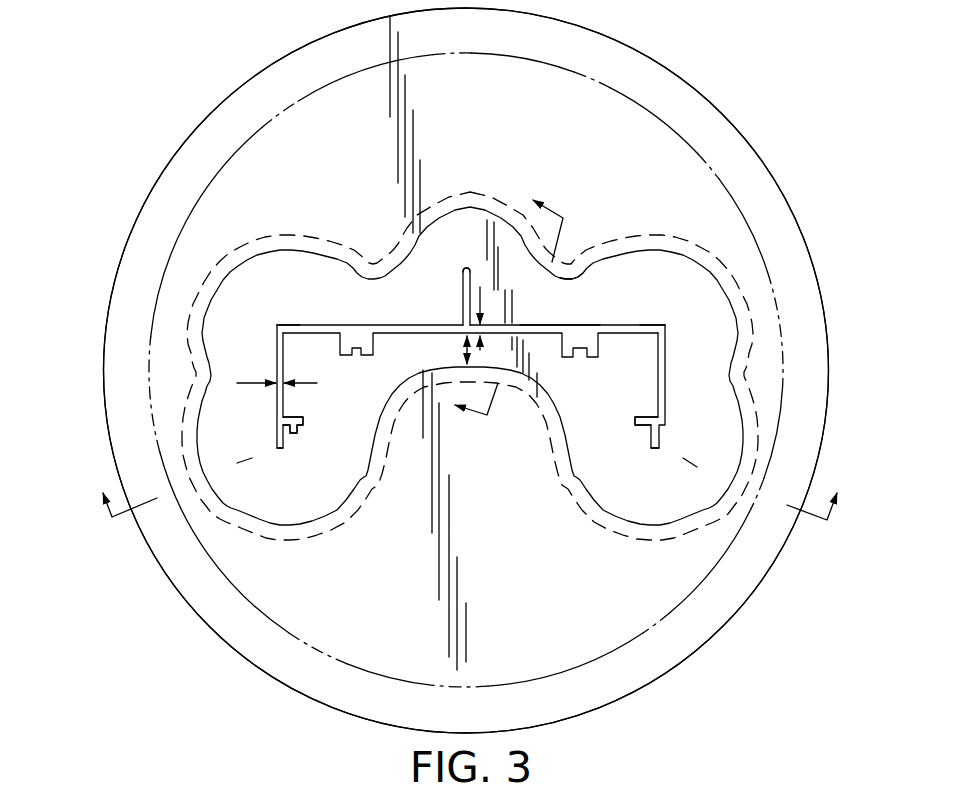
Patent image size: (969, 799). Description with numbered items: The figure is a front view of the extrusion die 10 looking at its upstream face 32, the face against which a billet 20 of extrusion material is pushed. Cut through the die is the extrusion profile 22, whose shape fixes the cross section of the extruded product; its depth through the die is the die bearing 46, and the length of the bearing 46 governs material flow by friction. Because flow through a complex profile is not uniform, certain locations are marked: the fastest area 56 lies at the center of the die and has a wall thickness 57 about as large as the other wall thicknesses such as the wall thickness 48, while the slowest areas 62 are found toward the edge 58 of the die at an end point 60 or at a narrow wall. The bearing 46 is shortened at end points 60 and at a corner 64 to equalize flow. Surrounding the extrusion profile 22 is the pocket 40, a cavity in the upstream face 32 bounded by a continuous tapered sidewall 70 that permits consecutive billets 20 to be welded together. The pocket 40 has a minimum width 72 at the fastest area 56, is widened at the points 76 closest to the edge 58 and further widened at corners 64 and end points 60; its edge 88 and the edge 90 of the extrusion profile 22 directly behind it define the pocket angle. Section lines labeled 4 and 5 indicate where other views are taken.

The extrusion die 10 is at (733, 100).
The billet 20 is at (340, 662).
The upstream face 32 is at (612, 625).
The edge of the die 58 is at (827, 320).
The pocket 40 is at (690, 512).
The tapered sidewall 70 is at (747, 303).
The extrusion profile 22 is at (623, 325).
The die bearing 46 is at (322, 323).
The edge of the extrusion profile 90 is at (543, 328).
The fastest area 56 is at (463, 327).
The wall thickness 57 is at (480, 295).
The points closest to the edge of the die 76 is at (276, 390).
The slowest areas 62 is at (276, 444).
The corner 64 is at (277, 327).
The end point 60 is at (467, 267).
The wall thickness 48 is at (255, 383).
The minimum width 72 is at (466, 357).
The edge of the pocket 88 is at (578, 277).
The section line 4- 4 is at (511, 315).
The section line 5- 5 is at (468, 509).